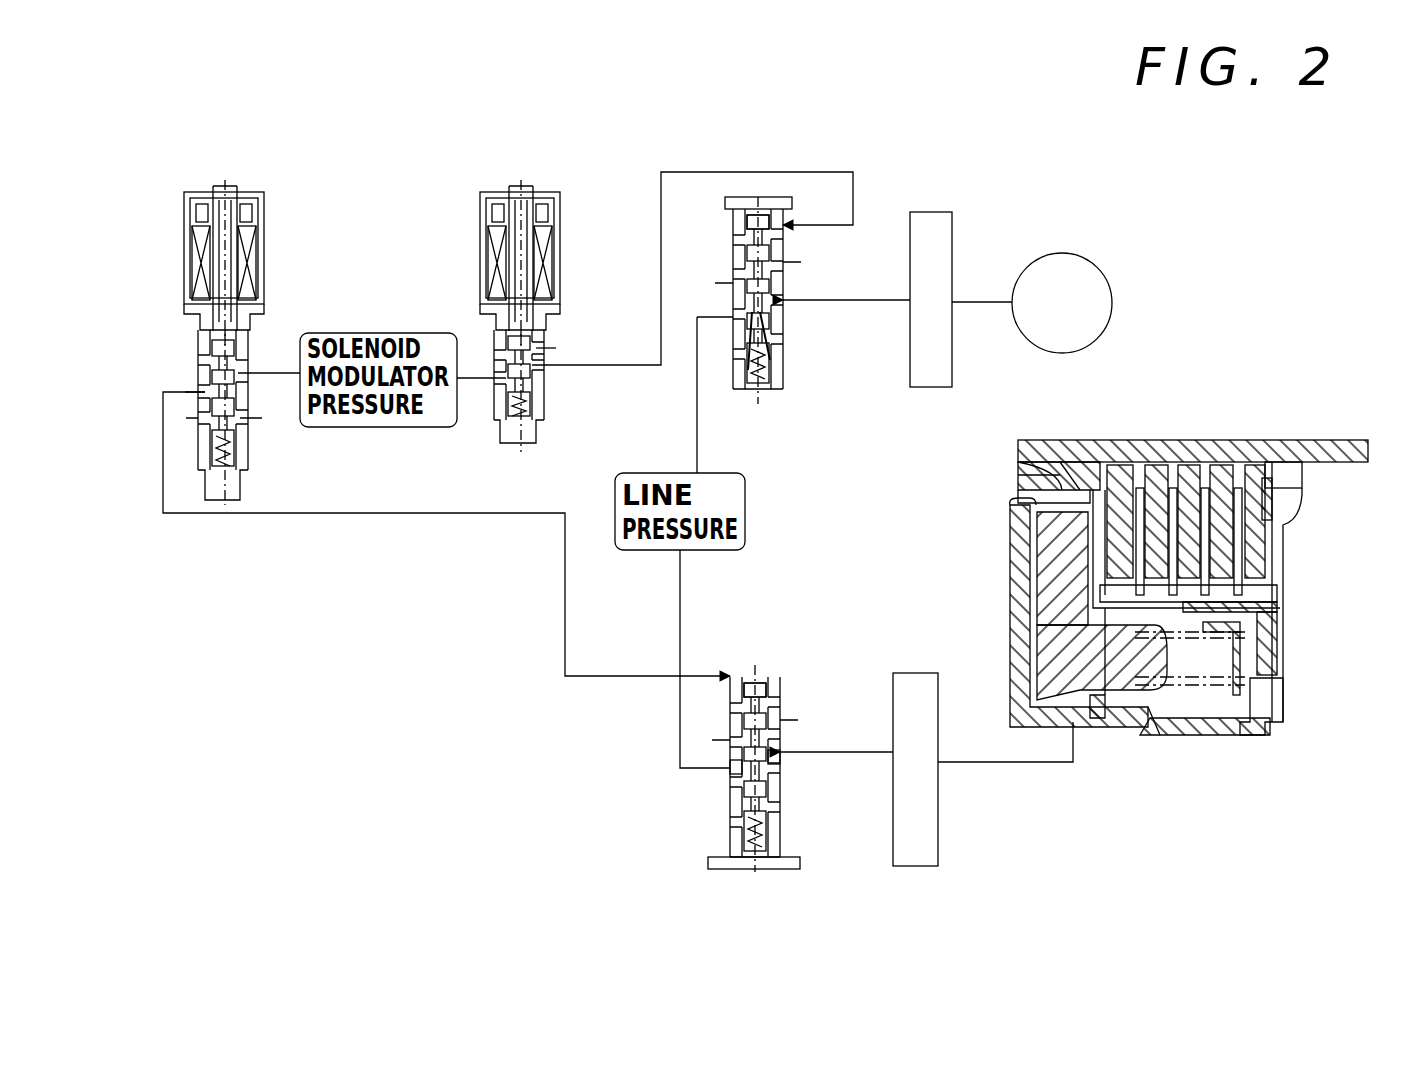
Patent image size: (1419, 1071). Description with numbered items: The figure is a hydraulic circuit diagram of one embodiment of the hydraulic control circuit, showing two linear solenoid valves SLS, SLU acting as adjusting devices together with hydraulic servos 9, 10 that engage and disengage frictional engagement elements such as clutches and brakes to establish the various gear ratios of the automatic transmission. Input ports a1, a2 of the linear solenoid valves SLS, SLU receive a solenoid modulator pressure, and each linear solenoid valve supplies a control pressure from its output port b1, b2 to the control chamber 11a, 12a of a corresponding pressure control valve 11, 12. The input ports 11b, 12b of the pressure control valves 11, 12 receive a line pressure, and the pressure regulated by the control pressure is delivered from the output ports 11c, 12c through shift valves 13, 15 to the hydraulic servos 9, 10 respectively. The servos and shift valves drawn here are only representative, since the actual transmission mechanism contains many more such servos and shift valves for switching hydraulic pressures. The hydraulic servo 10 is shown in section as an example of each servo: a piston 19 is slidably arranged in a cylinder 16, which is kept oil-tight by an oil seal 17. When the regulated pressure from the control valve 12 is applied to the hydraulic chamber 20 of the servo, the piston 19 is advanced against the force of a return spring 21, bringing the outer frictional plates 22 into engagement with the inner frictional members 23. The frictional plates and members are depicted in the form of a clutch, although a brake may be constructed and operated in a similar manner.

The hydraulic servo 9 is at (1074, 257).
The hydraulic servo 10 is at (1047, 437).
The pressure control valve 11 is at (744, 192).
The control chamber 11a is at (786, 212).
The input port 11b is at (732, 316).
The output port 11c is at (782, 300).
The pressure control valve 12 is at (773, 670).
The control chamber 12a is at (740, 668).
The input port 12b is at (722, 771).
The output port 12c is at (779, 756).
The shift valve 13 is at (934, 212).
The shift valve 15 is at (908, 670).
The cylinder 16 is at (1010, 512).
The oil seal 17 is at (1078, 445).
The piston 19 is at (1050, 583).
The hydraulic chamber 20 is at (1033, 652).
The return spring 21 is at (1187, 688).
The outer frictional plates 22 is at (1220, 445).
The inner frictional members 23 is at (1170, 444).
The linear solenoid valve SLS is at (225, 170).
The linear solenoid valve SLU is at (525, 170).
The input port a1 is at (252, 370).
The input port a2 is at (488, 376).
The output port b1 is at (174, 390).
The output port b2 is at (553, 361).